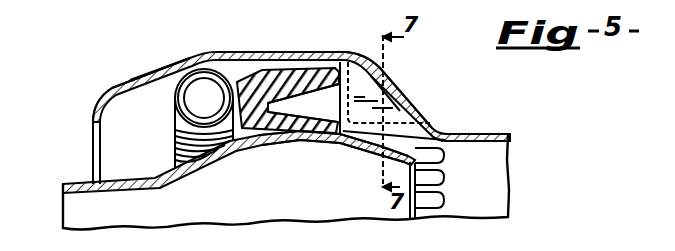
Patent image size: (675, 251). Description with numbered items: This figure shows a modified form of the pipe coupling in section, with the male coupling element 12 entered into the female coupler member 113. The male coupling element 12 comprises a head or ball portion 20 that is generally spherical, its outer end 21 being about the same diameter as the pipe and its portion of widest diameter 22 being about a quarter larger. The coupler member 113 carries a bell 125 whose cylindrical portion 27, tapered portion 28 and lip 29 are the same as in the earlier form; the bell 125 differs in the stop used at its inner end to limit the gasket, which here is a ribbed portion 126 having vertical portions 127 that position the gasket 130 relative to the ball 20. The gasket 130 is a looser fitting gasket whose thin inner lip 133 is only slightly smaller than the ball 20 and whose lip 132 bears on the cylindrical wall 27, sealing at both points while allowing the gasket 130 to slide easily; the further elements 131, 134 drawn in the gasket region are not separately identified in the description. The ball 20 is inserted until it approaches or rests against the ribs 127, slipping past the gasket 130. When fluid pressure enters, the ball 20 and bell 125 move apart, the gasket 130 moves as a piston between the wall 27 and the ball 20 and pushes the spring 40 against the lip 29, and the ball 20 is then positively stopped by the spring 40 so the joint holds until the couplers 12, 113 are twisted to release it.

The male coupling element 12 is at (70, 184).
The head or ball portion 20 is at (392, 154).
The outer end of the ball 21 is at (443, 172).
The portion of widest diameter 22 is at (298, 148).
The cylindrical portion 27 is at (262, 52).
The tapered portion 28 is at (142, 77).
The lip 29 is at (96, 99).
The spring 40 is at (178, 86).
The coupler member 113 is at (496, 134).
The bell 125 is at (320, 50).
The ribbed portion 126 is at (420, 101).
The vertical portions 127 is at (343, 90).
The gasket 130 is at (250, 145).
The passage 131 is at (270, 106).
The lip 132 is at (336, 74).
The inner lip 133 is at (323, 141).
The cylinder 134 is at (233, 101).